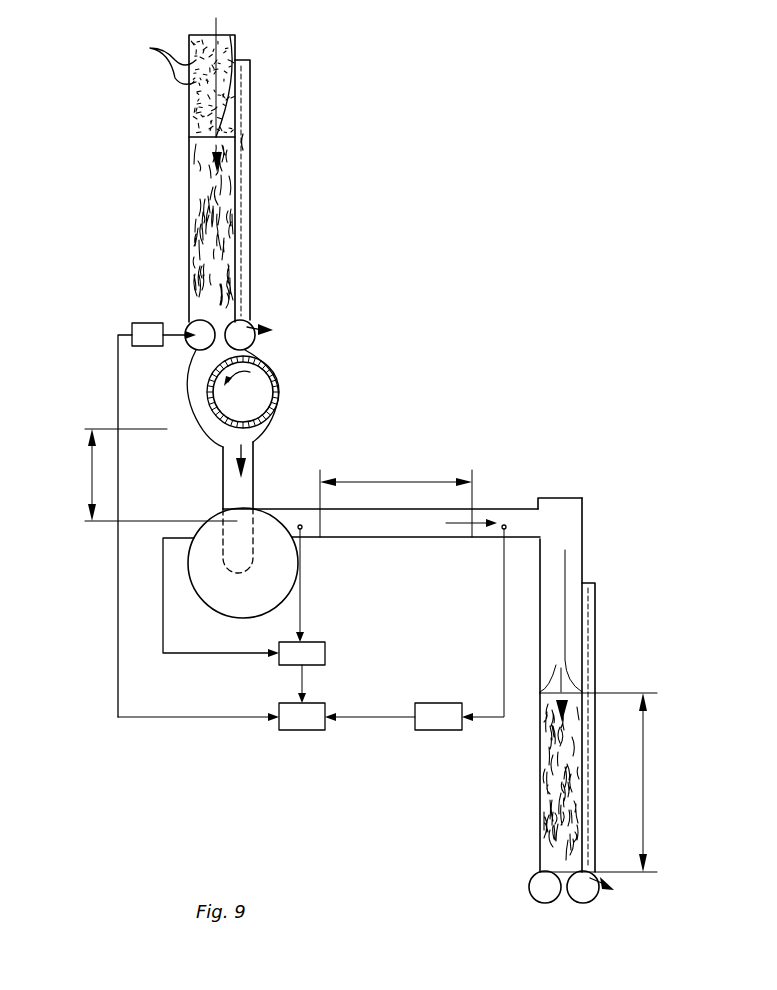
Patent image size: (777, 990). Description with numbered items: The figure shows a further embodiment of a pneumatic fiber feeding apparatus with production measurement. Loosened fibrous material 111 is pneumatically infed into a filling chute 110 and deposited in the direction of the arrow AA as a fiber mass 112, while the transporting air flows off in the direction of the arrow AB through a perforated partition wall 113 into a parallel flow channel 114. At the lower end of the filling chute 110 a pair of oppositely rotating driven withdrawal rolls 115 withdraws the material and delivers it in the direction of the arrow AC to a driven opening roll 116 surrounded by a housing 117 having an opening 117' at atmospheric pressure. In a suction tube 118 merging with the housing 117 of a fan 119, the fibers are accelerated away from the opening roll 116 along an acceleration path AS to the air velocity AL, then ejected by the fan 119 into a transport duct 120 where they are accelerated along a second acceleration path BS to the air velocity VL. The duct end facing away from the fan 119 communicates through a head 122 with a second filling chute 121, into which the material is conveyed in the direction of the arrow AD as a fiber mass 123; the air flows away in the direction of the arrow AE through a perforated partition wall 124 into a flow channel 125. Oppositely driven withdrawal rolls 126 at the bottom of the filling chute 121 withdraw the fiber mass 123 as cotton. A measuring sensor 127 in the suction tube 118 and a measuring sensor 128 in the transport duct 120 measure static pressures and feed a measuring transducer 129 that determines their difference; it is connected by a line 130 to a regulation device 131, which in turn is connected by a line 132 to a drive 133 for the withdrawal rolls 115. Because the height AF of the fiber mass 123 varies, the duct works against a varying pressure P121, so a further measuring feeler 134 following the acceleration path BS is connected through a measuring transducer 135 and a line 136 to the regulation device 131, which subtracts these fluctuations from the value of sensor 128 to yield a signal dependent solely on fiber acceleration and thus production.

The filling chute 110 is at (190, 112).
The fibrous material 111 is at (155, 62).
The fiber mass 112 is at (198, 214).
The perforated partition wall 113 is at (238, 88).
The flow channel 114 is at (244, 137).
The withdrawal rolls 115 is at (243, 328).
The opening roll 116 is at (258, 392).
The housing 117 is at (266, 392).
The opening 117' is at (295, 351).
The suction tube 118 is at (238, 444).
The fan 119 is at (210, 596).
The transport duct 120 is at (385, 540).
The filling chute 121 is at (566, 542).
The head 122 is at (555, 496).
The fiber mass 123 is at (546, 842).
The perforated partition wall 124 is at (590, 630).
The flow channel 125 is at (590, 672).
The withdrawal rolls 126 is at (555, 892).
The measuring sensor 127 is at (237, 538).
The measuring sensor 128 is at (302, 528).
The measuring transducer 129 is at (315, 648).
The line 130 is at (305, 682).
The regulation device 131 is at (292, 720).
The line 132 is at (130, 718).
The drive 133 is at (143, 330).
The measuring feeler 134 is at (502, 528).
The measuring transducer 135 is at (428, 722).
The line 136 is at (368, 718).
The arrow AA is at (205, 139).
The arrow AB is at (225, 40).
The arrow AC is at (196, 384).
The arrow AD is at (540, 692).
The arrow AE is at (565, 572).
The height AF is at (643, 775).
The acceleration path AS is at (82, 475).
The air velocity AL is at (246, 460).
The acceleration path BS is at (370, 462).
The air velocity VL is at (456, 523).
The varying pressure P121 is at (572, 510).